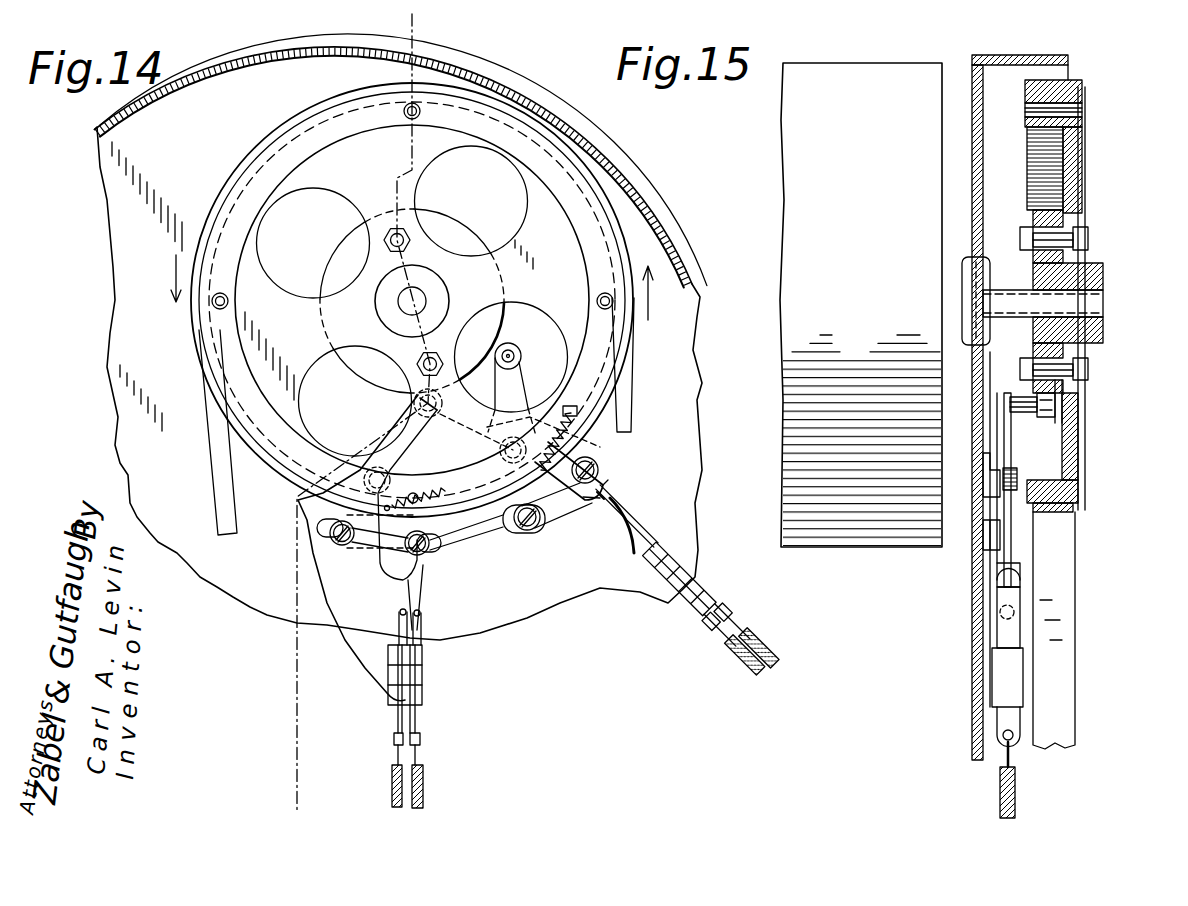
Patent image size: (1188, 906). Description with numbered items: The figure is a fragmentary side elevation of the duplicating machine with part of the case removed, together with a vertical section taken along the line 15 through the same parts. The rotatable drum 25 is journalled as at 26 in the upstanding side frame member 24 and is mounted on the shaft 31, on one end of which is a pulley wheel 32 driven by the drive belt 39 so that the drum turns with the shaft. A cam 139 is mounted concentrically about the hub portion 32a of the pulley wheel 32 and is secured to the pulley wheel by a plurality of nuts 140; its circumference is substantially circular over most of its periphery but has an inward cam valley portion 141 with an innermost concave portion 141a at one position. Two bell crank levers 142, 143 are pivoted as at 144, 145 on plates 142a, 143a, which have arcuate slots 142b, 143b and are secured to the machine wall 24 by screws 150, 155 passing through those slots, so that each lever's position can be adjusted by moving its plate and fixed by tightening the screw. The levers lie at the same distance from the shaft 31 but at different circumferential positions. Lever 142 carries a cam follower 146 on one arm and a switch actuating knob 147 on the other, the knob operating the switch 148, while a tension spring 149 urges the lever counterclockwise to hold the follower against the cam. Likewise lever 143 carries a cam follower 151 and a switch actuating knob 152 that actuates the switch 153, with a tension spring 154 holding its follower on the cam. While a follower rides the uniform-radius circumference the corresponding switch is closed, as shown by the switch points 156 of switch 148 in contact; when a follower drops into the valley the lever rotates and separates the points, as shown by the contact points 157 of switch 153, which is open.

In FIG. 14, the section line 15— 15 is at (436, 39).
In FIG. 14, the side frame member 24 is at (125, 243).
In FIG. 15, the side frame member 24 is at (971, 634).
In FIG. 14, the rotatable drum 25 is at (535, 96).
In FIG. 15, the rotatable drum 25 is at (783, 145).
In FIG. 15, the journal 26 is at (962, 267).
In FIG. 14, the shaft 31 is at (421, 298).
In FIG. 15, the shaft 31 is at (1103, 305).
In FIG. 14, the pulley wheel 32 is at (308, 162).
In FIG. 15, the pulley wheel 32 is at (1084, 168).
In FIG. 14, the hub portion 32a is at (377, 299).
In FIG. 15, the hub portion 32a is at (1103, 278).
In FIG. 14, the drive belt 39 is at (207, 443).
In FIG. 15, the drive belt 39 is at (1075, 670).
In FIG. 14, the cam 139 is at (465, 238).
In FIG. 15, the cam 139 is at (1063, 217).
In FIG. 14, the nuts 140 is at (395, 231).
In FIG. 15, the nuts 140 is at (1088, 236).
In FIG. 14, the cam valley portion 141 is at (470, 352).
In FIG. 14, the innermost concave portion 141a is at (414, 400).
In FIG. 15, the innermost concave portion 141a is at (1060, 398).
In FIG. 14, the bell crank lever 142 is at (535, 366).
In FIG. 14, the plate 142a is at (635, 590).
In FIG. 14, the arcuate slot 142b is at (690, 449).
In FIG. 14, the bell crank lever 143 is at (398, 425).
In FIG. 15, the bell crank lever 143 is at (1011, 452).
In FIG. 14, the plate 143a is at (372, 674).
In FIG. 15, the plate 143a is at (997, 591).
In FIG. 14, the arcuate slot 143b is at (392, 575).
In FIG. 14, the pivot 144 is at (500, 453).
In FIG. 14, the pivot 145 is at (363, 478).
In FIG. 15, the pivot 145 is at (1017, 474).
In FIG. 14, the cam follower 146 is at (515, 345).
In FIG. 14, the switch actuating knob 147 is at (582, 517).
In FIG. 14, the switch 148 is at (716, 540).
In FIG. 14, the tension spring 149 is at (595, 446).
In FIG. 14, the screw 150 is at (598, 470).
In FIG. 14, the cam follower 151 is at (436, 414).
In FIG. 15, the cam follower 151 is at (1047, 422).
In FIG. 14, the switch actuating knob 152 is at (405, 600).
In FIG. 15, the switch actuating knob 152 is at (1020, 577).
In FIG. 14, the switch 153 is at (437, 683).
In FIG. 15, the switch 153 is at (997, 679).
In FIG. 14, the tension spring 154 is at (442, 548).
In FIG. 14, the screw 155 is at (360, 543).
In FIG. 15, the screw 155 is at (987, 543).
In FIG. 14, the switch points 156 is at (622, 558).
In FIG. 14, the contact points 157 is at (421, 613).
In FIG. 15, the contact points 157 is at (1014, 613).